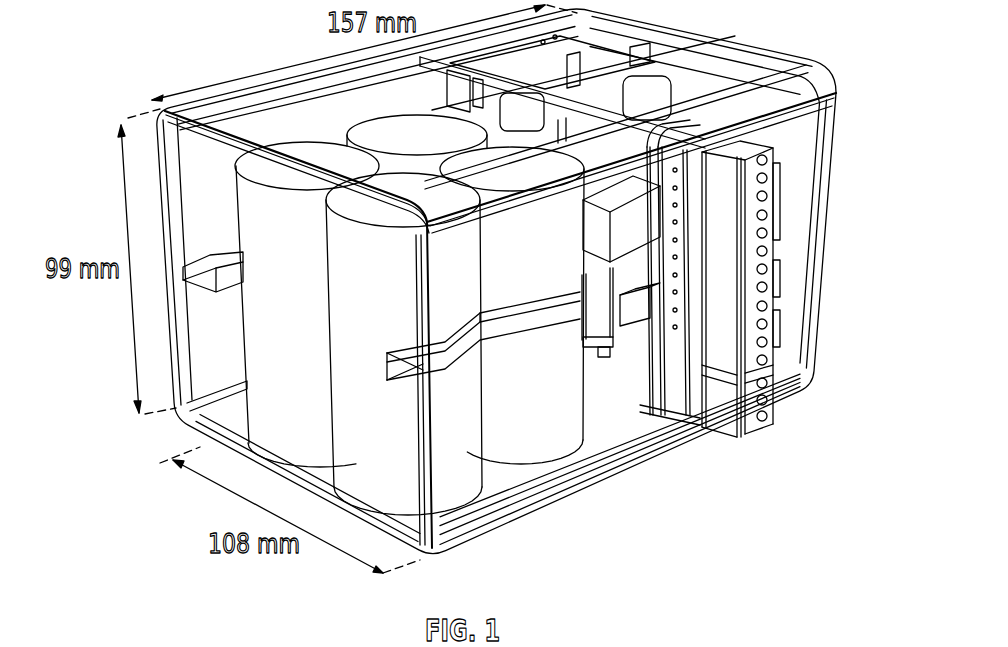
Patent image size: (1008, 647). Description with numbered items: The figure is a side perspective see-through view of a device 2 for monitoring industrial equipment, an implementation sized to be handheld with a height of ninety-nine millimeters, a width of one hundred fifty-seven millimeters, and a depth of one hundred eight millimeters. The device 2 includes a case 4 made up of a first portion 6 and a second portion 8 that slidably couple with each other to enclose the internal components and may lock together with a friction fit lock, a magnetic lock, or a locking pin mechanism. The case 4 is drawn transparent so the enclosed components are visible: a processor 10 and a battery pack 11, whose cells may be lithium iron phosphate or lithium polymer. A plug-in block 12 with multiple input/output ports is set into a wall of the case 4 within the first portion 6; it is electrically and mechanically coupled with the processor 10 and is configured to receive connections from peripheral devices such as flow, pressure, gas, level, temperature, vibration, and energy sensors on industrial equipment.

The device 2 is at (210, 62).
The case 4 is at (259, 96).
The first portion 6 is at (832, 182).
The second portion 8 is at (268, 444).
The processor 10 is at (707, 67).
The battery pack 11 is at (540, 433).
The plug-in block 12 is at (760, 413).